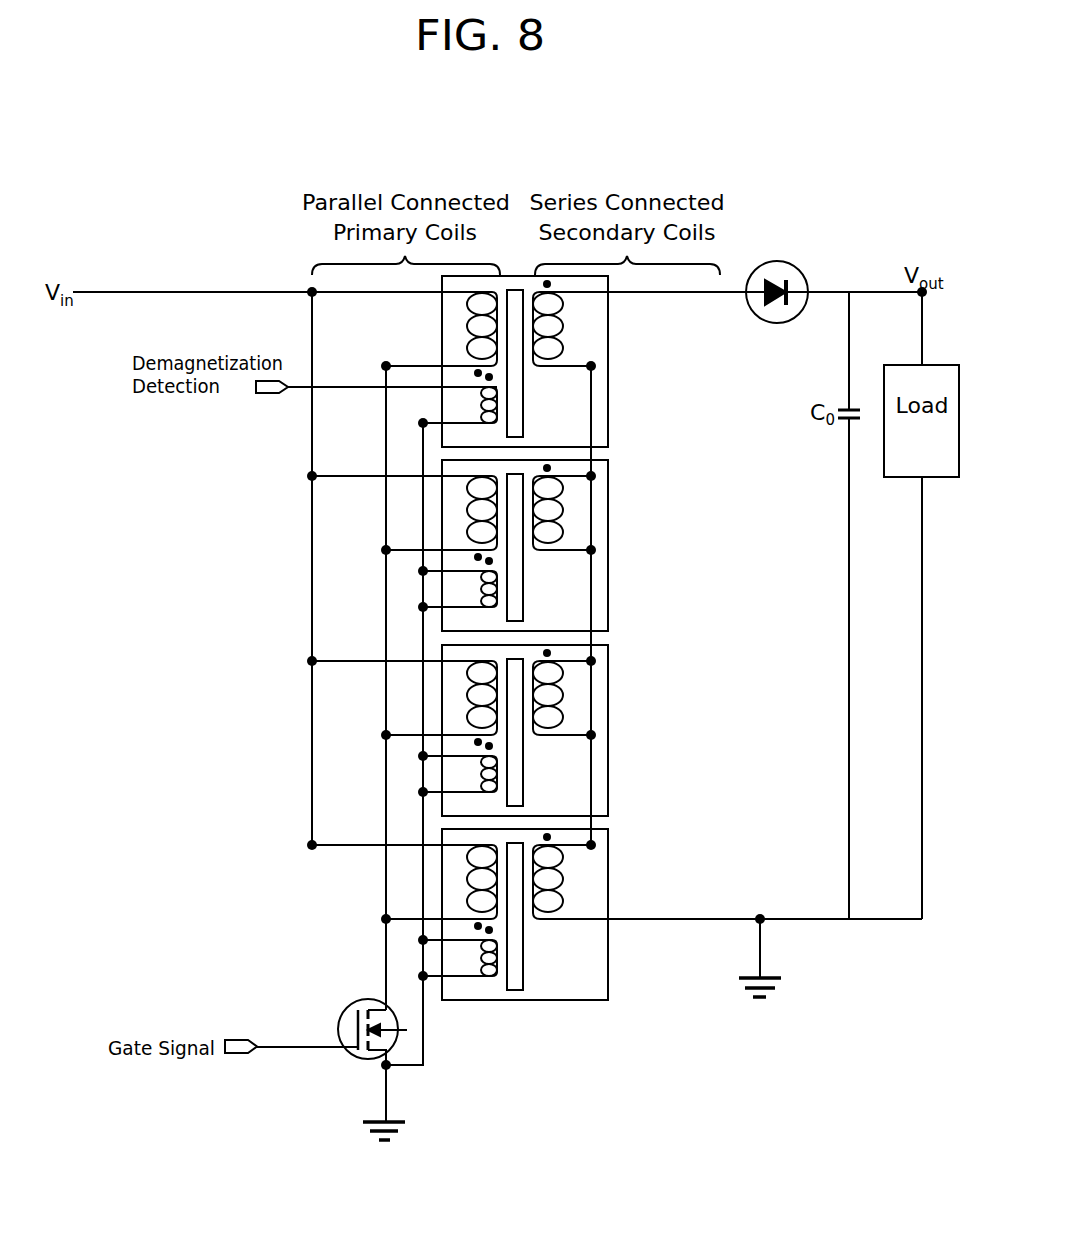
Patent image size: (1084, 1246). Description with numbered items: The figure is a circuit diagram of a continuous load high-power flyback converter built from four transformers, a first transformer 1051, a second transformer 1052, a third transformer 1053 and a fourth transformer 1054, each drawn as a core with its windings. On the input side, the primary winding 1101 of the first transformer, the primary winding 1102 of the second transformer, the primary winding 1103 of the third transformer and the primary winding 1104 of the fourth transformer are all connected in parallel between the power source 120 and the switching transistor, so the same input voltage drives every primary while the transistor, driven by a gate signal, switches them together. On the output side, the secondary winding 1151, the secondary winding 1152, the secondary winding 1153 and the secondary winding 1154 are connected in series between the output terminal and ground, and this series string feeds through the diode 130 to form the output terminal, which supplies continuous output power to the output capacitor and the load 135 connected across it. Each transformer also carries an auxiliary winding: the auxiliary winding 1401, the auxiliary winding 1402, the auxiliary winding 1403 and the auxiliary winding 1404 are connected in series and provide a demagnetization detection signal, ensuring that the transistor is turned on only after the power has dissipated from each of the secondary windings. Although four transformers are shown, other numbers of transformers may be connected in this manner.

The power source 120 is at (113, 288).
The primary winding 1101 is at (466, 348).
The primary winding 1102 is at (468, 531).
The primary winding 1103 is at (468, 716).
The primary winding 1104 is at (468, 900).
The auxiliary winding 1401 is at (482, 395).
The auxiliary winding 1402 is at (482, 580).
The auxiliary winding 1403 is at (482, 765).
The auxiliary winding 1404 is at (482, 950).
The first transformer 1051 is at (580, 424).
The second transformer 1052 is at (580, 609).
The third transformer 1053 is at (580, 791).
The fourth transformer 1054 is at (580, 977).
The secondary winding 1151 is at (565, 350).
The secondary winding 1152 is at (565, 493).
The secondary winding 1153 is at (565, 720).
The secondary winding 1154 is at (565, 863).
The diode 130 is at (795, 348).
The load 135 is at (904, 449).